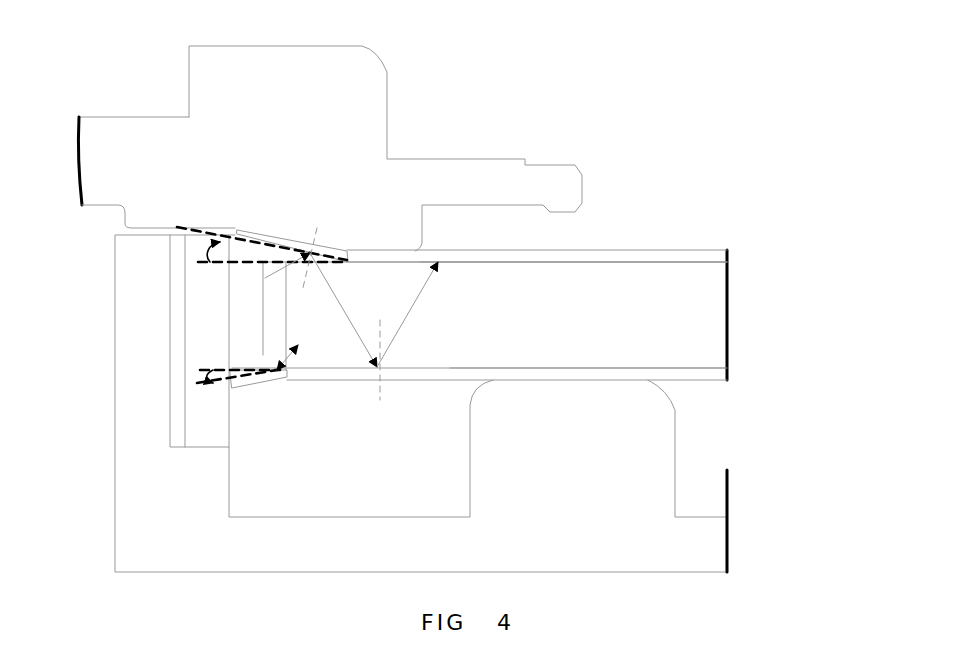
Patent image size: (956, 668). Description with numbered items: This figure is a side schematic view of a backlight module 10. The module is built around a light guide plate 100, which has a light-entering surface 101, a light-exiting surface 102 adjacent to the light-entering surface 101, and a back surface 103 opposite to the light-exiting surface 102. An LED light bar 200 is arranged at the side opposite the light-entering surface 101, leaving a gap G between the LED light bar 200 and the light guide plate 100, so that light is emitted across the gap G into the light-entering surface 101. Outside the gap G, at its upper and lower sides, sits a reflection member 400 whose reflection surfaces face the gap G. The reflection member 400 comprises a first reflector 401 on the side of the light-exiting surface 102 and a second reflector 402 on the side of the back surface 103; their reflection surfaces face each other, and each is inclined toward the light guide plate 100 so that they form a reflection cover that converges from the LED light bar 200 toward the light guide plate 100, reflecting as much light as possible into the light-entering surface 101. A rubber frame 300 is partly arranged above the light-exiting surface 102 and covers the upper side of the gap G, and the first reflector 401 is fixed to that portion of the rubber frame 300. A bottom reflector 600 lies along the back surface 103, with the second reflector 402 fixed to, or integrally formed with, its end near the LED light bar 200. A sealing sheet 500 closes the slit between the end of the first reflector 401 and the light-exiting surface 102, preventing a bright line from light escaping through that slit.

The backlight module 10 is at (737, 110).
The light guide plate 100 is at (678, 318).
The light-entering surface 101 is at (288, 313).
The light-exiting surface 102 is at (678, 260).
The back surface 103 is at (672, 368).
The LED light bar 200 is at (242, 272).
The rubber frame 300 is at (193, 135).
The reflection member 400 is at (334, 240).
The first reflector 401 is at (238, 231).
The second reflector 402 is at (242, 382).
The sealing sheet 500 is at (423, 262).
The bottom reflector 600 is at (703, 377).
The gap G is at (280, 330).